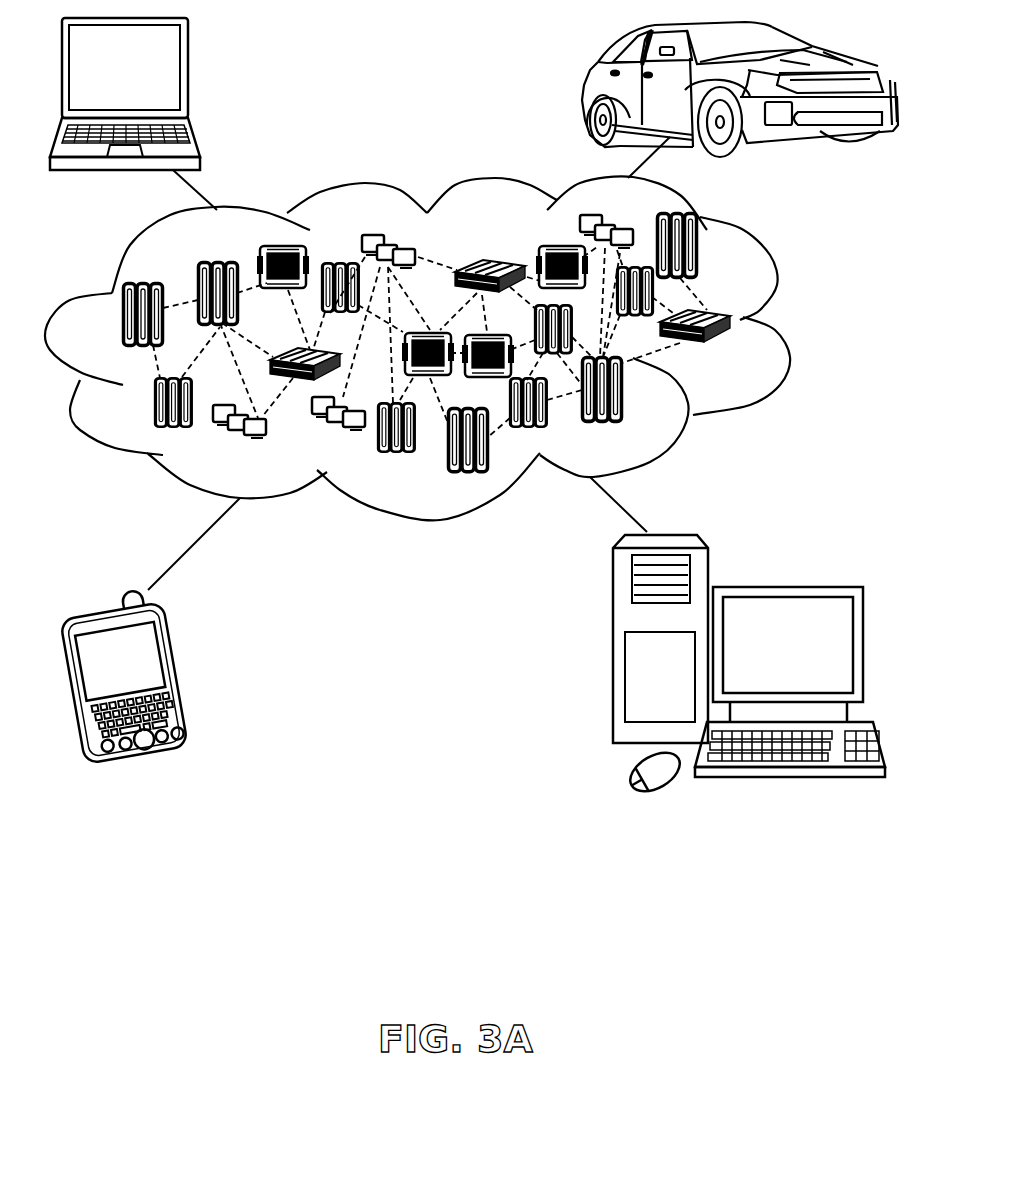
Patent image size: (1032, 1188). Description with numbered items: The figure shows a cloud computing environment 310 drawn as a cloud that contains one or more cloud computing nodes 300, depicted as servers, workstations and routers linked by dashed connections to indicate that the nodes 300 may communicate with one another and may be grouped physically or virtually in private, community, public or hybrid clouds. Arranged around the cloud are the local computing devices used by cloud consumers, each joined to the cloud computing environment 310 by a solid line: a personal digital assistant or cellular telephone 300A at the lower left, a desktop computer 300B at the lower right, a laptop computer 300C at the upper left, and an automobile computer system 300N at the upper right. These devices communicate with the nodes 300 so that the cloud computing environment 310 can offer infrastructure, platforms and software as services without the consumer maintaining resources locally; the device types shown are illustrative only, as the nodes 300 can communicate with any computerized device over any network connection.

The cloud computing nodes 300 is at (738, 353).
The cloud computing environment 310 is at (789, 328).
The personal digital assistant (PDA) or cellular telephone 300A is at (177, 670).
The desktop computer 300B is at (787, 587).
The laptop computer 300C is at (188, 74).
The automobile computer system 300N is at (583, 88).